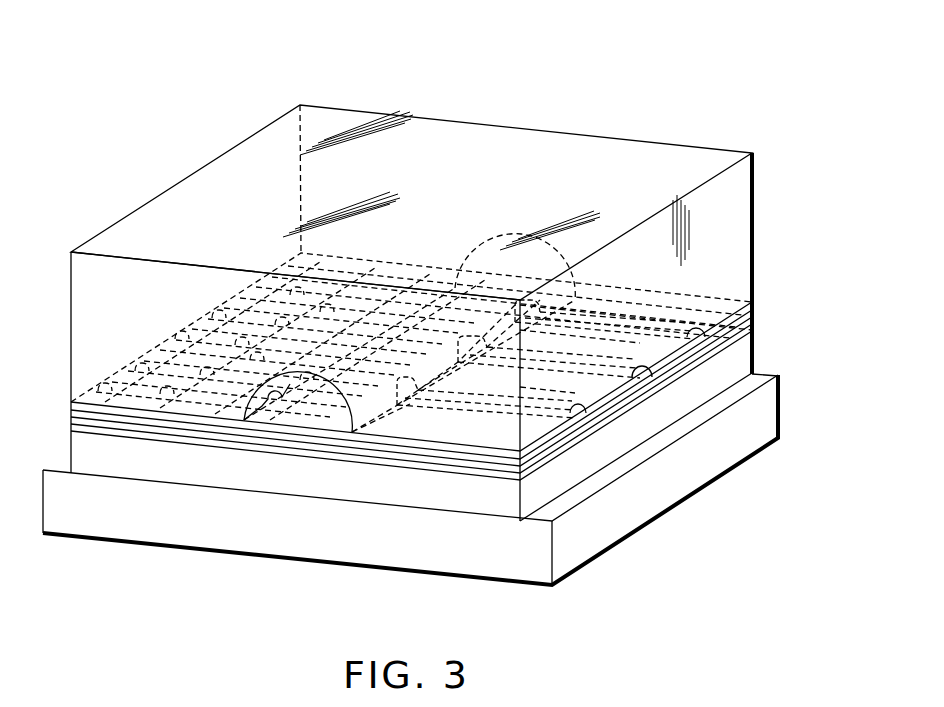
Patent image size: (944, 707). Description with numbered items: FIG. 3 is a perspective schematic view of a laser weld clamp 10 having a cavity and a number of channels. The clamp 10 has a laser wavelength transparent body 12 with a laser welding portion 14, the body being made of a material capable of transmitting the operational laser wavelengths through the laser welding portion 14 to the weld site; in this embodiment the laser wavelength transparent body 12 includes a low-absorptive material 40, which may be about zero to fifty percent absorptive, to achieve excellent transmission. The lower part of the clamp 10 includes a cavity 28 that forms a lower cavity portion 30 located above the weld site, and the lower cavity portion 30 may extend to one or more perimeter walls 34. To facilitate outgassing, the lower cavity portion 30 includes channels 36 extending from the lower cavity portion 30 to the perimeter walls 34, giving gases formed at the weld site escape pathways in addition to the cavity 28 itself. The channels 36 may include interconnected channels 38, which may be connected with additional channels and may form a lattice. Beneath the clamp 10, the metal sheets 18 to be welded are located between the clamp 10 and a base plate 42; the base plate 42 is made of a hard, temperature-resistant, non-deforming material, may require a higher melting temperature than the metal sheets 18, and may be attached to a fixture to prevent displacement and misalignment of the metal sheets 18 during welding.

The laser weld clamp 10 is at (541, 88).
The laser wavelength transparent body 12 is at (203, 177).
The laser welding portion 14 is at (93, 352).
The metal sheets 18 is at (71, 404).
The cavity 28 is at (300, 397).
The lower cavity portion 30 is at (327, 400).
The perimeter walls 34 is at (693, 170).
The channels 36 is at (587, 405).
The interconnected channels 38 is at (153, 350).
The low-absorptive material 40 is at (92, 299).
The base plate 42 is at (470, 545).